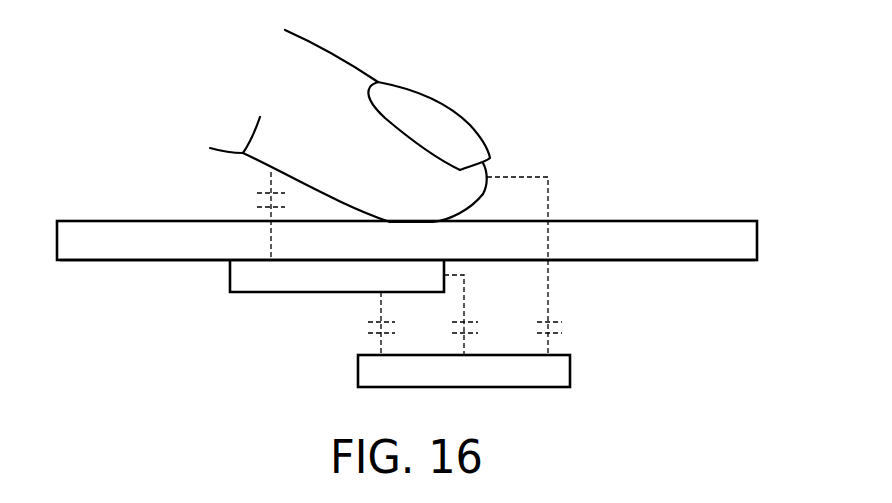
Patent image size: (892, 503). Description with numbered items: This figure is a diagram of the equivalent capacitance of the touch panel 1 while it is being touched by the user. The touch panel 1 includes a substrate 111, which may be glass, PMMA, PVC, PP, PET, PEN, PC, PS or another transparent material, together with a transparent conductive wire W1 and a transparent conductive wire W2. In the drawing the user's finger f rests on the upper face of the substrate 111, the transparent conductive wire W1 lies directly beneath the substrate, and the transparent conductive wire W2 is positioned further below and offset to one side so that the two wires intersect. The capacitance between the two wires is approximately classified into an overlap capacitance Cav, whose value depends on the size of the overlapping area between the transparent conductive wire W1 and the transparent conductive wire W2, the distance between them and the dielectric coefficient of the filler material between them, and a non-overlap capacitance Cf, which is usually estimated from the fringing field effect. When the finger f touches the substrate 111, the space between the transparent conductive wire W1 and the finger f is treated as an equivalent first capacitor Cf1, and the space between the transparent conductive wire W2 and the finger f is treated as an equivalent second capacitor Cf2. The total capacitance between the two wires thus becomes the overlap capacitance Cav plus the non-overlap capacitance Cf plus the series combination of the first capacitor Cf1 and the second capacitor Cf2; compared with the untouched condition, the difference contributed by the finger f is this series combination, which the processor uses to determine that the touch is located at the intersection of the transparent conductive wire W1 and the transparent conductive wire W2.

The touch panel 1 is at (80, 211).
The substrate 111 is at (138, 261).
The finger f is at (333, 75).
The transparent conductive wire W1 is at (260, 293).
The transparent conductive wire W2 is at (382, 378).
The first capacitor Cf1 is at (255, 216).
The overlap capacitance Cav is at (369, 323).
The non-overlap capacitance Cf is at (452, 315).
The second capacitor Cf2 is at (524, 266).